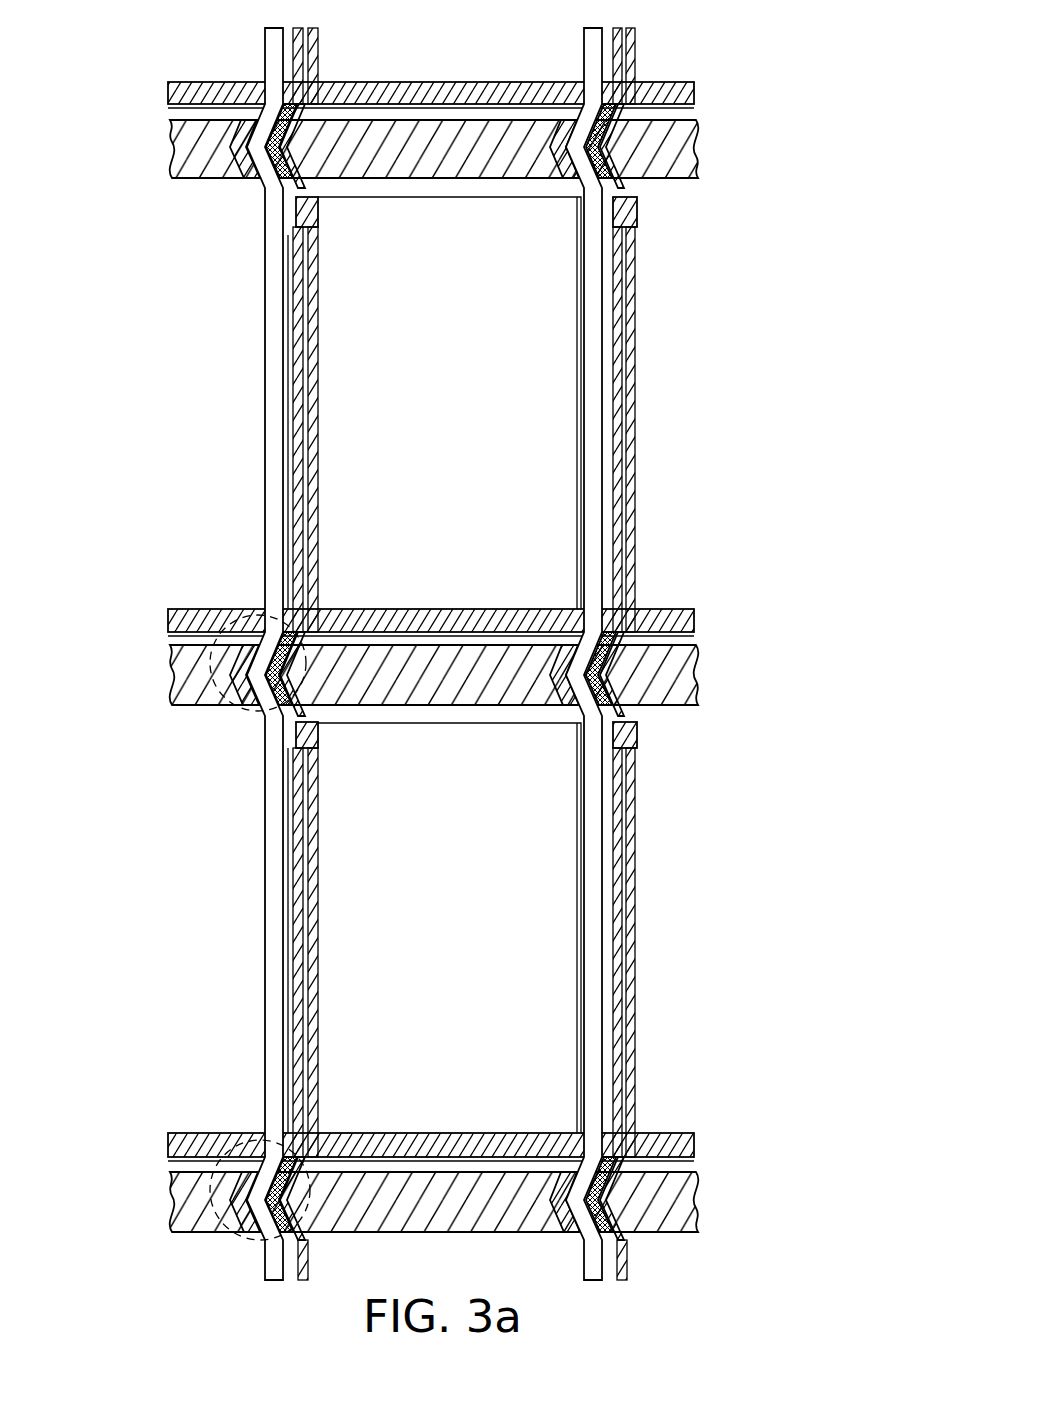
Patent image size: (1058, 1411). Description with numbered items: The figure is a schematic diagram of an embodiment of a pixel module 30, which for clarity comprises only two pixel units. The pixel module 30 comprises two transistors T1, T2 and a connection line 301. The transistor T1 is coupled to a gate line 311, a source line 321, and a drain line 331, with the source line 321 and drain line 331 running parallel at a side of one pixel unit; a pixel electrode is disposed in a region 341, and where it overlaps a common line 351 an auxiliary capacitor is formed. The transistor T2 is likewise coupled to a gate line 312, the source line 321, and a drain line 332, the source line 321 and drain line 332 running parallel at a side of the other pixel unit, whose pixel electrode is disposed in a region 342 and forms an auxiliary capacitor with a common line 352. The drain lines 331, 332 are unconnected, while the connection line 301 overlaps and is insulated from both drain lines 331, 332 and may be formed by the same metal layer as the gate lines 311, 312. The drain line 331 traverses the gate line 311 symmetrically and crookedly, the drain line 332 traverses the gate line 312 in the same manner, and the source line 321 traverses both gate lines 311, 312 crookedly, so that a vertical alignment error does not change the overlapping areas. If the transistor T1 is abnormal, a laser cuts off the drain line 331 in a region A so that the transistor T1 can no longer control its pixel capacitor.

The pixel module 30 is at (449, 642).
The gate line 311 is at (203, 1203).
The gate line 312 is at (203, 676).
The source line 321 is at (275, 328).
The drain line 331 is at (298, 752).
The drain line 332 is at (298, 210).
The region 341 is at (578, 942).
The region 342 is at (578, 410).
The common line 351 is at (692, 1147).
The common line 352 is at (692, 622).
The connection line 301 is at (297, 728).
The transistor T1 is at (222, 1132).
The transistor T2 is at (225, 607).
The region A is at (282, 1128).